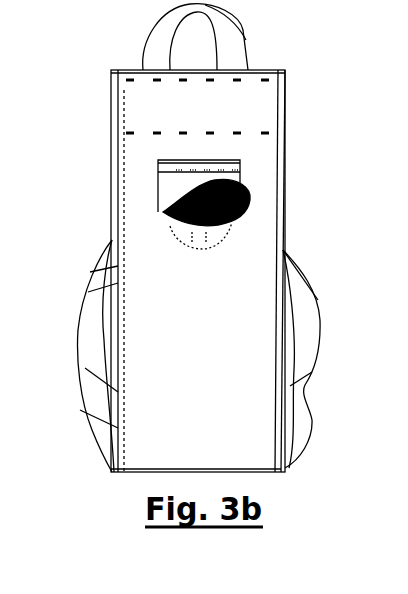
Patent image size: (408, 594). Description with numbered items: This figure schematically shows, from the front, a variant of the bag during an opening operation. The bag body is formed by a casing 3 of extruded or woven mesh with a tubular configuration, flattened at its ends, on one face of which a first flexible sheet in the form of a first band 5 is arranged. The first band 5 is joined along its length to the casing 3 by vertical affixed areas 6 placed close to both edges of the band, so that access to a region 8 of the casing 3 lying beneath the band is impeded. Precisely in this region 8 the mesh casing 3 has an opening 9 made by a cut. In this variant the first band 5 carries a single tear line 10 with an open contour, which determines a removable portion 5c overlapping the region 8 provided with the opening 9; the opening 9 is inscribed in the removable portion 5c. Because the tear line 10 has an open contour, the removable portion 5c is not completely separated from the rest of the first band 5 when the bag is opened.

The casing 3 is at (88, 366).
The first band 5 is at (180, 338).
The removable portion 5c is at (244, 213).
The affixed areas 6 is at (113, 270).
The region 8 is at (165, 212).
The opening 9 is at (160, 170).
The tear line 10 is at (240, 172).